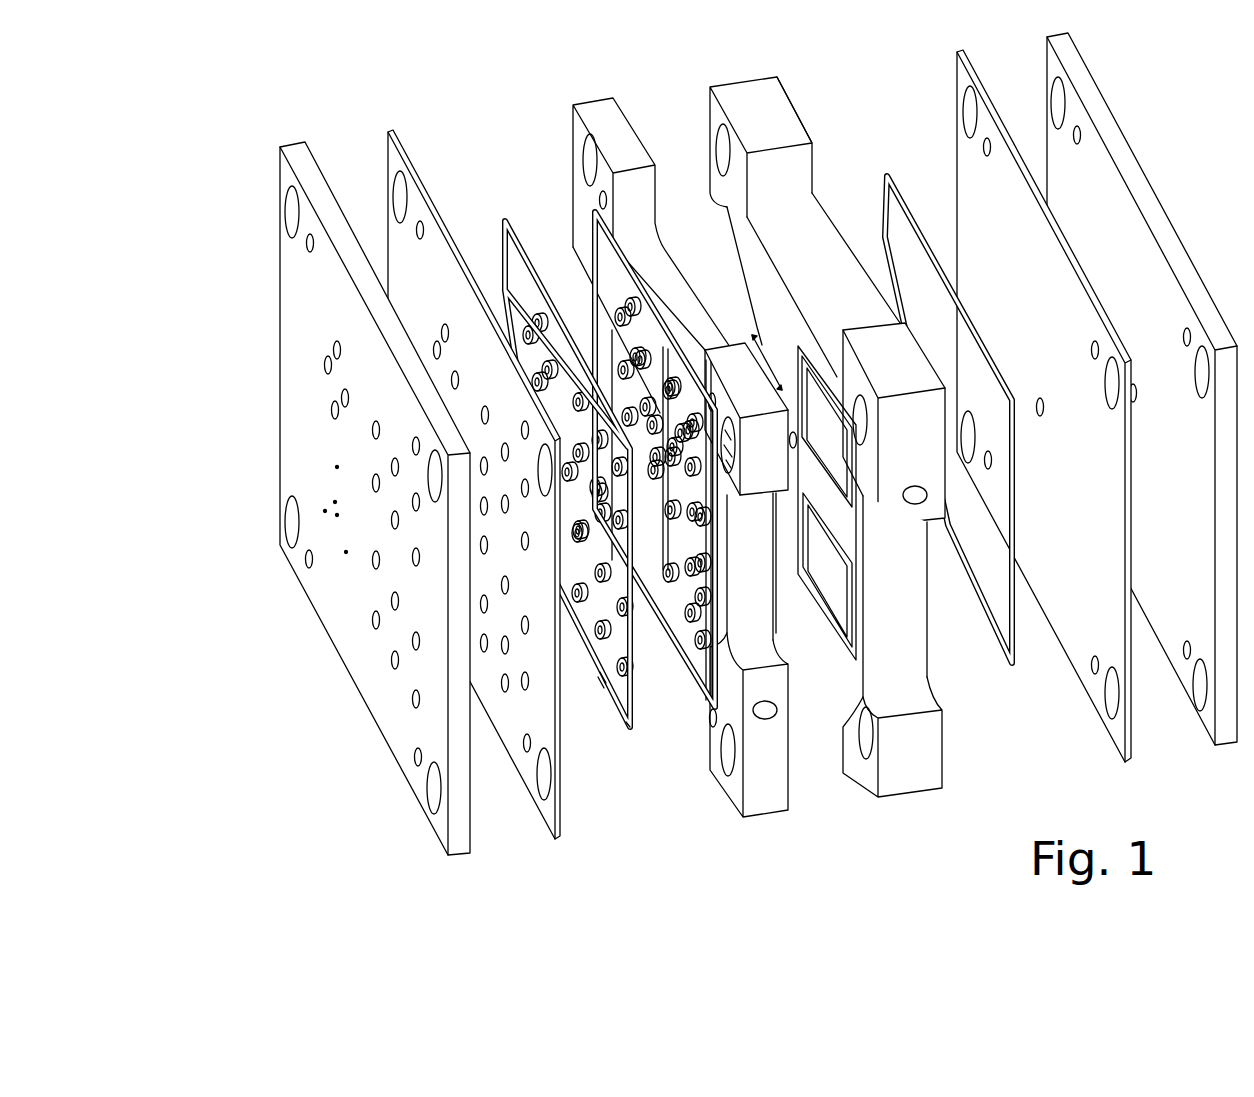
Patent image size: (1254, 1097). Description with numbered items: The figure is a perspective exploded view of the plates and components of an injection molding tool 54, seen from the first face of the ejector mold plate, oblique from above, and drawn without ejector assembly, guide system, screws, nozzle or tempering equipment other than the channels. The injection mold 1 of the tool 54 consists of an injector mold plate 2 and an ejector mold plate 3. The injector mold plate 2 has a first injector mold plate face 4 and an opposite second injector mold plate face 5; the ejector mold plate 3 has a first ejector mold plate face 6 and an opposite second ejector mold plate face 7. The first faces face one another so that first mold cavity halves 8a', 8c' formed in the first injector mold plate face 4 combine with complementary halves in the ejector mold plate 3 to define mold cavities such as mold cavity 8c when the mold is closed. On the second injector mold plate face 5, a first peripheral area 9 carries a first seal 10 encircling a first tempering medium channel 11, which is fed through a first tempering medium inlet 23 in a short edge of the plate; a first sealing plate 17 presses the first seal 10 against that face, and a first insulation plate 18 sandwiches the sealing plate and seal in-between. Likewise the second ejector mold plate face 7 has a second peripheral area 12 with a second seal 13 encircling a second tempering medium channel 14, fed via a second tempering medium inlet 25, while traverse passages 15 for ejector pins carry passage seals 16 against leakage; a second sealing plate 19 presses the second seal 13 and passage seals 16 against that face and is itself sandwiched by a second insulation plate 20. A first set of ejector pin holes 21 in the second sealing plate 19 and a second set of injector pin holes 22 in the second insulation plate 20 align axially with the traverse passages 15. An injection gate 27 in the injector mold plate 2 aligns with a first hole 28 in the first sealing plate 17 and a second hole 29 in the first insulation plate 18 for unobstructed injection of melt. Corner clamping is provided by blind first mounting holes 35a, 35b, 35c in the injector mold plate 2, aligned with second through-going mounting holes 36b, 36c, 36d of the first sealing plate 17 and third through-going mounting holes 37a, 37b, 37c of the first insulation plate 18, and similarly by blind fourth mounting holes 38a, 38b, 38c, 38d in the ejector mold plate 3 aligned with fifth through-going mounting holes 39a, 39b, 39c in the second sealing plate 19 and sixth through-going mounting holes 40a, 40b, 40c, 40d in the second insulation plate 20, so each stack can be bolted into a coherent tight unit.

The injection mold 1 is at (536, 110).
The injector mold plate 2 is at (776, 76).
The ejector mold plate 3 is at (594, 104).
The first injector mold plate face 4 is at (735, 268).
The second injector mold plate face 5 is at (826, 224).
The first ejector mold plate face 6 is at (672, 250).
The second ejector mold plate face 7 is at (573, 217).
The first mold cavity half 8a' is at (852, 503).
The first mold cavity half 8c' is at (796, 341).
The mold cavity 8c is at (765, 566).
The first peripheral area 9 is at (945, 723).
The first seal 10 is at (1012, 668).
The first tempering medium channel 11 is at (848, 270).
The second peripheral area 12 is at (711, 726).
The second seal 13 is at (623, 727).
The second tempering medium channel 14 is at (697, 643).
The traverse passages 15 is at (670, 593).
The passage seals 16 is at (582, 607).
The first sealing plate 17 is at (955, 183).
The first insulation plate 18 is at (1147, 200).
The second sealing plate 19 is at (388, 136).
The second insulation plate 20 is at (298, 143).
The first set of ejector pin holes 21 is at (443, 332).
The second set of injector pin holes 22 is at (327, 363).
The first tempering medium inlet 23 is at (915, 505).
The second tempering medium inlet 25 is at (765, 719).
The injection gate 27 is at (794, 448).
The first hole 28 is at (1042, 408).
The second hole 29 is at (1134, 394).
The first mounting hole 35a is at (803, 123).
The first mounting hole 35b is at (930, 354).
The first mounting hole 35c is at (945, 755).
The second through-going mounting hole 36b is at (1092, 348).
The second through-going mounting hole 36c is at (1093, 660).
The second through-going mounting hole 36d is at (987, 460).
The third through-going mounting hole 37a is at (1078, 130).
The third through-going mounting hole 37b is at (1188, 335).
The third through-going mounting hole 37c is at (1185, 650).
The fourth mounting hole 38a is at (604, 198).
The fourth mounting hole 38b is at (746, 419).
The fourth mounting hole 38c is at (630, 727).
The fourth mounting hole 38d is at (603, 683).
The fifth through-going mounting hole 39a is at (422, 227).
The fifth through-going mounting hole 39b is at (524, 428).
The fifth through-going mounting hole 39c is at (524, 752).
The sixth through-going mounting hole 40a is at (307, 242).
The sixth through-going mounting hole 40b is at (415, 444).
The sixth through-going mounting hole 40c is at (418, 762).
The sixth through-going mounting hole 40d is at (307, 561).
The injection molding tool 54 is at (203, 393).